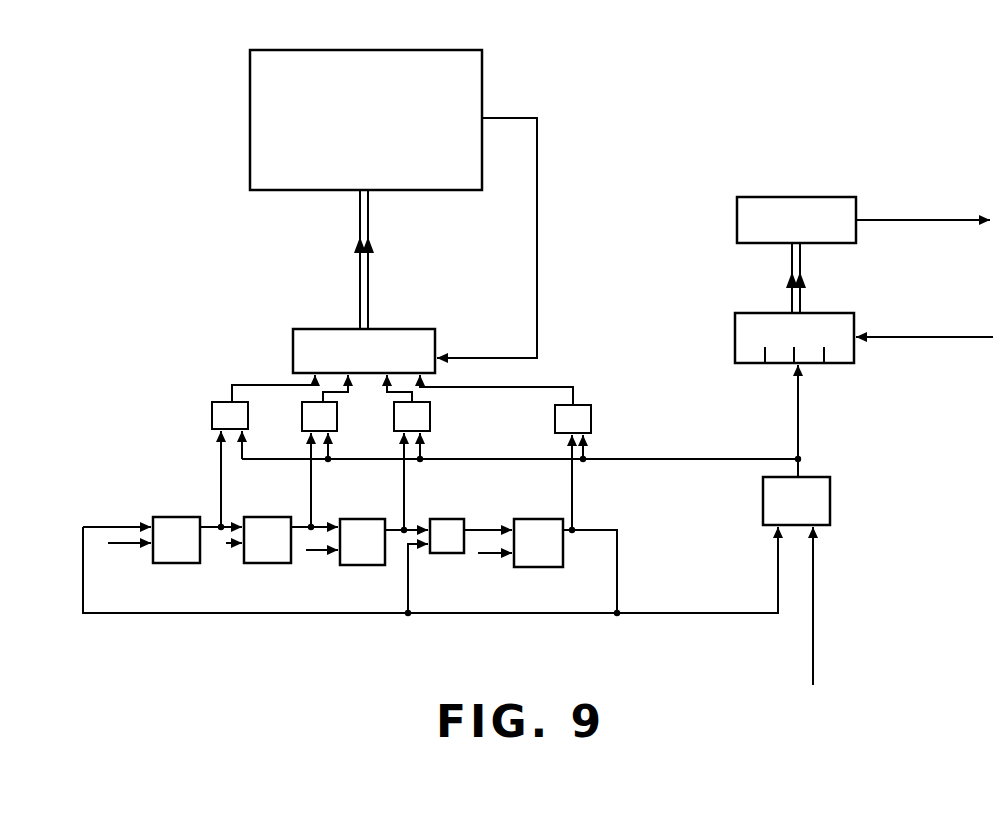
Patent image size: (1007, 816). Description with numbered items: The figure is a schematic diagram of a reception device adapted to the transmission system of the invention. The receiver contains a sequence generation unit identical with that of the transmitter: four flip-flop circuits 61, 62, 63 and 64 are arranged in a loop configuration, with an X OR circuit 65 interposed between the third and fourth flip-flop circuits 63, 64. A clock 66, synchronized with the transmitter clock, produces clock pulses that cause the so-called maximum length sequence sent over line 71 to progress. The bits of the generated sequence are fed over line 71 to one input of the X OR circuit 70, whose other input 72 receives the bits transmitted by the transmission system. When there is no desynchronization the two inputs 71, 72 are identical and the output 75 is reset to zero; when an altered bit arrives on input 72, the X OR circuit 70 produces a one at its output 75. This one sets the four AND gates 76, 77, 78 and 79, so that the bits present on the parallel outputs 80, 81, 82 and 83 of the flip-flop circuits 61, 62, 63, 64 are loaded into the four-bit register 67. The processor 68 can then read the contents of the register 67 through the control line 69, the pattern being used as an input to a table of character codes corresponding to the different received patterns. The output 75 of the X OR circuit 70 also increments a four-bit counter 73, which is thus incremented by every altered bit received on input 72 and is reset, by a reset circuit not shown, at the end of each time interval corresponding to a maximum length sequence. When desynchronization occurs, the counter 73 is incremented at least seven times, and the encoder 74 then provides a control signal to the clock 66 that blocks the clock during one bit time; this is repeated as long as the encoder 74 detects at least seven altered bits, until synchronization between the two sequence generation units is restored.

The flip-flop circuit 61 is at (178, 517).
The flip-flop circuit 62 is at (252, 517).
The flip-flop circuit 63 is at (350, 519).
The flip-flop circuit 64 is at (548, 519).
The X OR circuit 65 is at (440, 553).
The clock 66 is at (109, 572).
The four-bit register 67 is at (326, 329).
The processor 68 is at (250, 110).
The control line 69 is at (540, 178).
The X OR circuit 70 is at (763, 498).
The line 71 is at (703, 615).
The input 72 is at (812, 650).
The four-bit counter 73 is at (735, 325).
The encoder 74 is at (750, 197).
The output 75 is at (798, 432).
The AND gate 76 is at (215, 402).
The AND gate 77 is at (282, 427).
The AND gate 78 is at (427, 409).
The AND gate 79 is at (555, 418).
The parallel output 80 is at (220, 482).
The parallel output 81 is at (310, 504).
The parallel output 82 is at (406, 510).
The parallel output 83 is at (574, 500).